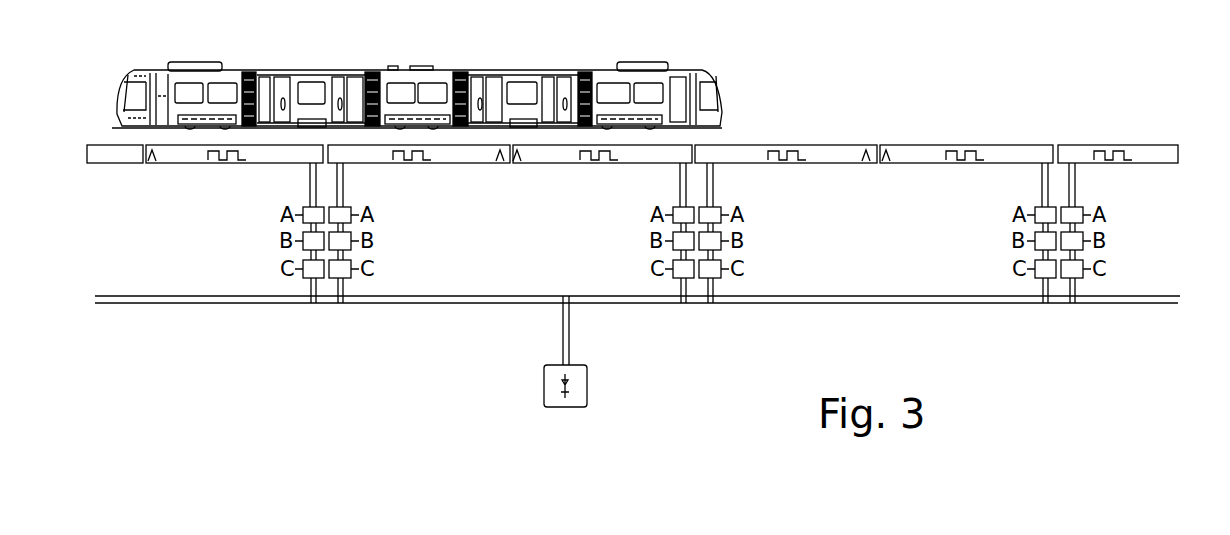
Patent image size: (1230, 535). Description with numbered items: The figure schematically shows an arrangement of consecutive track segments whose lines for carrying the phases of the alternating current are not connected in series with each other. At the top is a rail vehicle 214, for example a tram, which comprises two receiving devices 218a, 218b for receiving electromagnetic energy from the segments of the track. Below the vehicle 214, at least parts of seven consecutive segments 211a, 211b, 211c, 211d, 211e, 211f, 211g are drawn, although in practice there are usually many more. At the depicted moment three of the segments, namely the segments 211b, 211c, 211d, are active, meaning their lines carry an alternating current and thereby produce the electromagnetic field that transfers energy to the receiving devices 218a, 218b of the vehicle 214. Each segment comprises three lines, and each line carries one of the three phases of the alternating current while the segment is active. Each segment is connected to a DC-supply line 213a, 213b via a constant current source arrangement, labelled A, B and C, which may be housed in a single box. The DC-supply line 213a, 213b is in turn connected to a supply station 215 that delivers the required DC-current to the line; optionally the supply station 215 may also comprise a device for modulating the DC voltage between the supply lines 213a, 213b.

The rail vehicle 214 is at (423, 70).
The receiving device 218a is at (313, 119).
The receiving device 218b is at (537, 117).
The segment 211a is at (118, 165).
The segment 211b is at (214, 165).
The segment 211c is at (416, 165).
The segment 211d is at (573, 165).
The segment 211e is at (750, 165).
The segment 211f is at (921, 165).
The segment 211g is at (1157, 165).
The DC-supply line 213a is at (114, 304).
The DC-supply line 213b is at (108, 295).
The supply station 215 is at (588, 389).